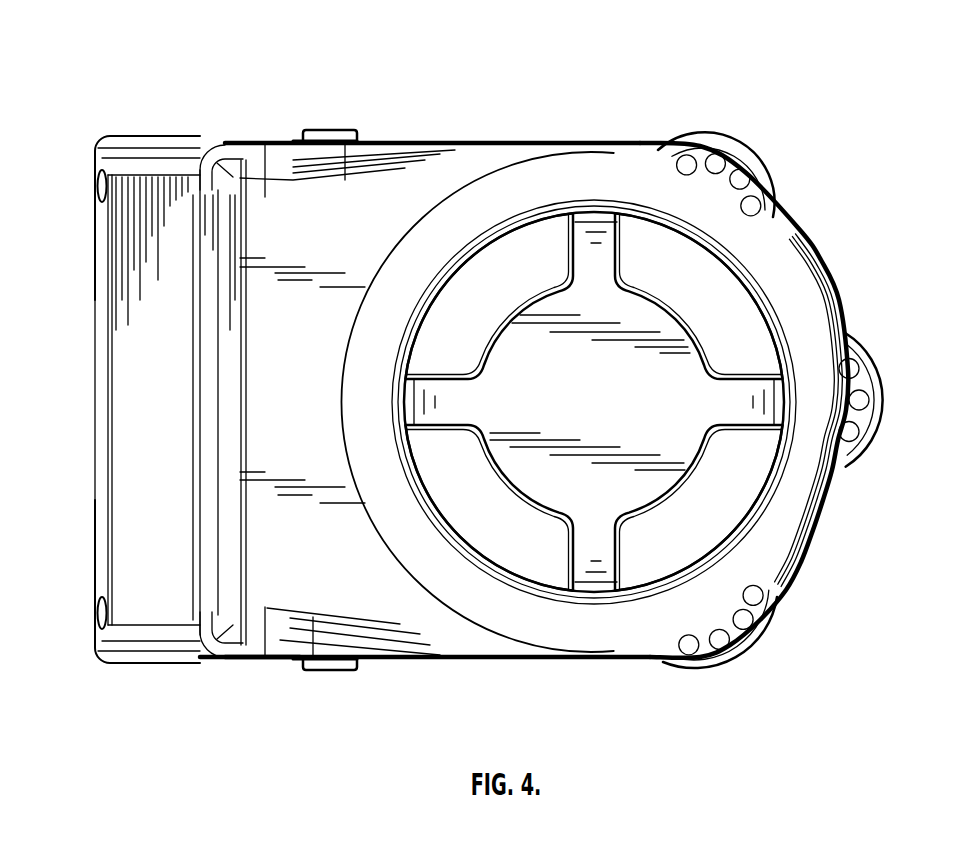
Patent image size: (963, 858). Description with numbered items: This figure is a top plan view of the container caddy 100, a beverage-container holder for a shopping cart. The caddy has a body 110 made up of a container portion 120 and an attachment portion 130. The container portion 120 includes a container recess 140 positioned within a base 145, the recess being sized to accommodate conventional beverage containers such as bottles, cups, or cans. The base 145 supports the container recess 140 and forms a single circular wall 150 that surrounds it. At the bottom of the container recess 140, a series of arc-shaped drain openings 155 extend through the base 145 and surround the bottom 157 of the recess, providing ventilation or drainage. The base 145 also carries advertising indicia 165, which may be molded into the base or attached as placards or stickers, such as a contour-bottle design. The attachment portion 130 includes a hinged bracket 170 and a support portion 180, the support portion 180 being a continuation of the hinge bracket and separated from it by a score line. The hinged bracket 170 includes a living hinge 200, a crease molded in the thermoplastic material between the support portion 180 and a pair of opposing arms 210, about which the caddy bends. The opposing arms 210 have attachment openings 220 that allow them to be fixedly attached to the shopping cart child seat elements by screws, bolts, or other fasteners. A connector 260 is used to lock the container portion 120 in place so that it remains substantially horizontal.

The container caddy 100 is at (524, 341).
The body 110 is at (477, 366).
The container portion 120 is at (594, 342).
The attachment portion 130 is at (147, 185).
The container recess 140 is at (590, 392).
The base 145 is at (821, 418).
The wall 150 is at (641, 402).
The drain openings 155 is at (593, 402).
The bottom 157 is at (655, 402).
The advertising indicia 165 is at (770, 399).
The hinged bracket 170 is at (147, 616).
The support portion 180 is at (250, 713).
The living hinge 200 is at (247, 402).
The opposing arms 210 is at (114, 400).
The attachment openings 220 is at (68, 404).
The connector 260 is at (306, 402).